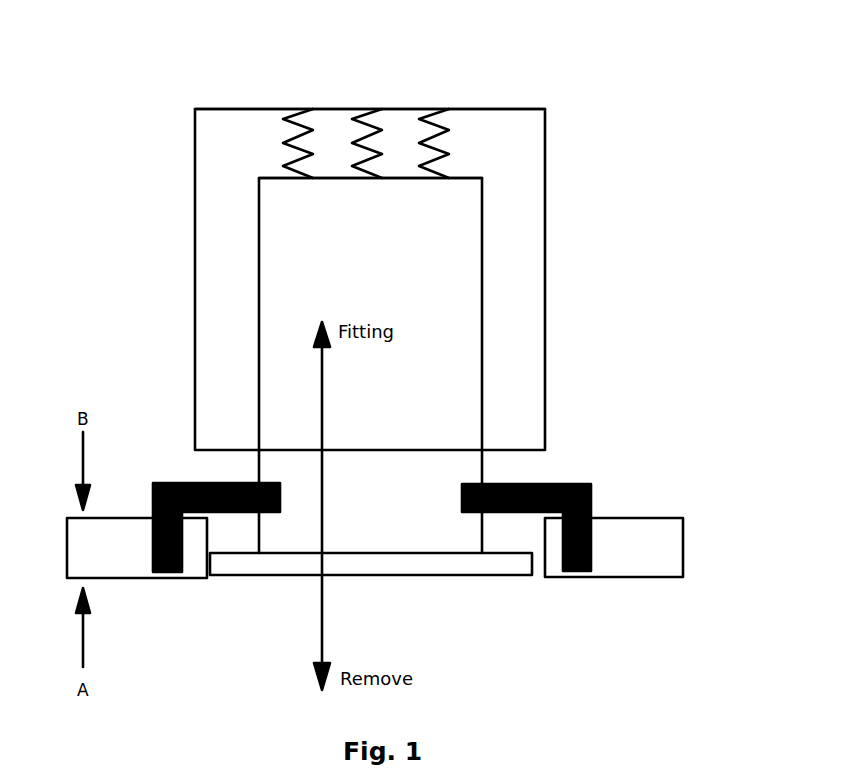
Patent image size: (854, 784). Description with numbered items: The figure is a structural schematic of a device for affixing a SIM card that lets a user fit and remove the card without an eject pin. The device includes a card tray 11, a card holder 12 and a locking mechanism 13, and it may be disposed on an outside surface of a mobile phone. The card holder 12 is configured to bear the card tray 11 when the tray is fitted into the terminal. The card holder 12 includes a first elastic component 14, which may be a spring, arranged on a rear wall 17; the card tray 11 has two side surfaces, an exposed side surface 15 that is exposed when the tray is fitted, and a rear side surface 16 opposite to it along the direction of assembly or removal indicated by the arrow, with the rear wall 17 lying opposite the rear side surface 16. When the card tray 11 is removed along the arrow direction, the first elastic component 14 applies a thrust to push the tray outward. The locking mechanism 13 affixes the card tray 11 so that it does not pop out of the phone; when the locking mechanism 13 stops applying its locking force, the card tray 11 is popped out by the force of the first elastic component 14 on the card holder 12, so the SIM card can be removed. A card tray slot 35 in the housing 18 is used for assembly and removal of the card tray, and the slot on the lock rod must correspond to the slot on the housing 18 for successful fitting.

The card tray 11 is at (483, 253).
The card holder 12 is at (212, 263).
The locking mechanism 13 is at (558, 480).
The first elastic component 14 is at (287, 143).
The exposed side surface 15 is at (438, 577).
The rear side surface 16 is at (470, 178).
The rear wall 17 is at (502, 109).
The housing 18 is at (657, 537).
The card tray slot 35 is at (240, 595).